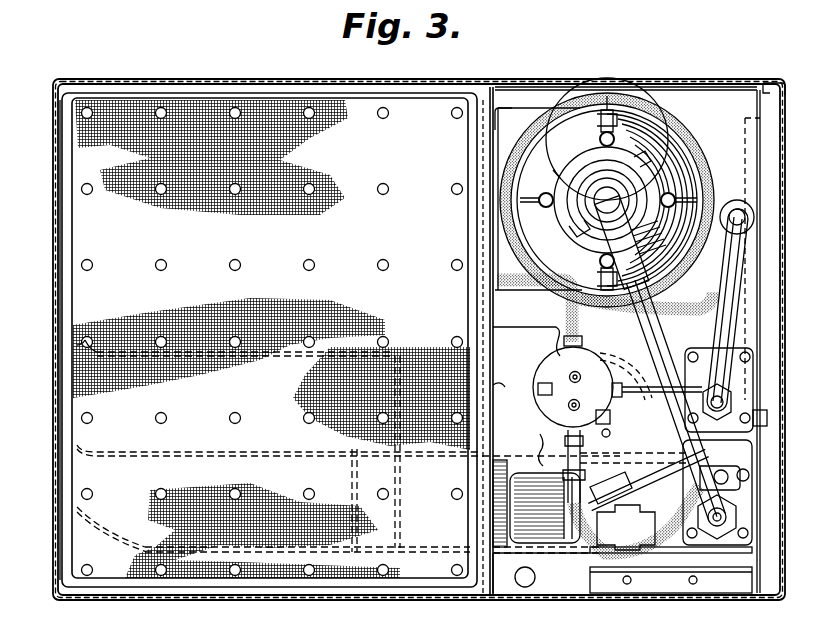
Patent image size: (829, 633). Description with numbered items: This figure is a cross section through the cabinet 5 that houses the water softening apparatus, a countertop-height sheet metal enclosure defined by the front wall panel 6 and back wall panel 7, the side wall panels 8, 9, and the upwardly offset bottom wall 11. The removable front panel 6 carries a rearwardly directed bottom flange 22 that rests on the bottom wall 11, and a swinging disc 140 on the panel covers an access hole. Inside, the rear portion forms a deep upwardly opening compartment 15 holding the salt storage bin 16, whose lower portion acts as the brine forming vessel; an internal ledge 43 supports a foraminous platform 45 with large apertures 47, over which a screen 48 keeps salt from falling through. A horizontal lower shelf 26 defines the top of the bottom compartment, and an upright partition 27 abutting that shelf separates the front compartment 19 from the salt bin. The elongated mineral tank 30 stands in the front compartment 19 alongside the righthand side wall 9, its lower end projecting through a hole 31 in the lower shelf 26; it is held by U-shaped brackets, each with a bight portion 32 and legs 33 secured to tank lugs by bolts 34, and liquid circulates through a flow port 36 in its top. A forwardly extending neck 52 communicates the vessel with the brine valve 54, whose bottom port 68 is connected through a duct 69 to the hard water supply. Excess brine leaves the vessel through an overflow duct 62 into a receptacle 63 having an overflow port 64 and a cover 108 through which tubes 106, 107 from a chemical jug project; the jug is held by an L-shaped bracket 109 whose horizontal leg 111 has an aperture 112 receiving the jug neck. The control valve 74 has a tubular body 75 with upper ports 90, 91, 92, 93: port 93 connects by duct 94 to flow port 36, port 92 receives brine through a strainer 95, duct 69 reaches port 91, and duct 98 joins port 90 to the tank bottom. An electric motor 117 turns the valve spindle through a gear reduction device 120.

The cabinet 5 is at (173, 61).
The front wall panel 6 is at (779, 593).
The back wall panel 7 is at (56, 353).
The side wall panel 8 is at (485, 604).
The righthand side wall panel 9 is at (441, 87).
The bottom wall 11 is at (737, 91).
The upwardly opening compartment 15 is at (66, 598).
The salt storage bin 16 is at (127, 598).
The front compartment 19 is at (557, 592).
The bottom flange 22 is at (783, 88).
The lower shelf 26 is at (707, 92).
The partition 27 is at (488, 243).
The mineral tank 30 is at (625, 110).
The hole 31 is at (656, 110).
The bight portion 32 is at (500, 120).
The legs 33 is at (536, 108).
The bolts 34 is at (616, 124).
The flow port 36 is at (613, 176).
The ledge 43 is at (76, 100).
The foraminous platform 45 is at (92, 470).
The apertures 47 is at (243, 107).
The screen 48 is at (225, 105).
The neck 52 is at (490, 503).
The brine valve 54 is at (550, 506).
The overflow duct 62 is at (588, 350).
The receptacle 63 is at (606, 420).
The overflow port 64 is at (616, 386).
The port 68 is at (585, 496).
The duct 69 is at (645, 483).
The control valve 74 is at (722, 566).
The tubular body 75 is at (746, 444).
The upper port 90 is at (701, 400).
The upper port 91 is at (698, 427).
The upper port 92 is at (736, 475).
The upper port 93 is at (736, 520).
The duct 94 is at (660, 346).
The strainer 95 is at (749, 486).
The duct 98 is at (736, 217).
The tube 106 is at (567, 406).
The tube 107 is at (578, 383).
The cover 108 is at (609, 435).
The L-shaped bracket 109 is at (533, 342).
The horizontal leg 111 is at (521, 445).
The aperture 112 is at (550, 390).
The electric motor 117 is at (631, 500).
The gear reduction device 120 is at (676, 582).
The swinging disc 140 is at (760, 421).